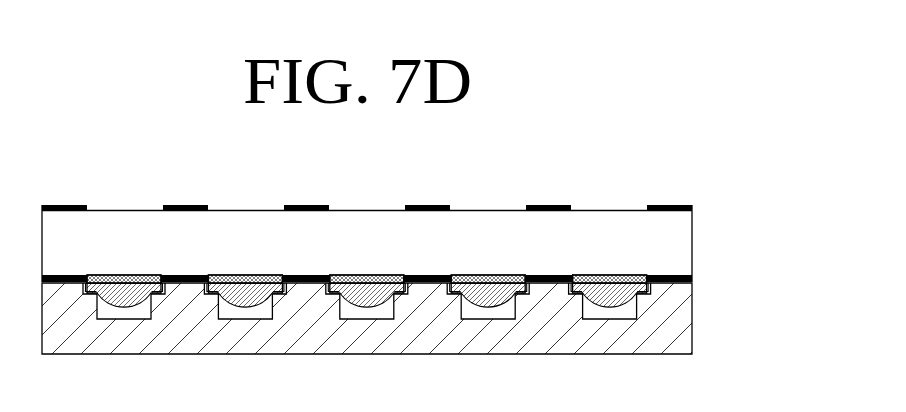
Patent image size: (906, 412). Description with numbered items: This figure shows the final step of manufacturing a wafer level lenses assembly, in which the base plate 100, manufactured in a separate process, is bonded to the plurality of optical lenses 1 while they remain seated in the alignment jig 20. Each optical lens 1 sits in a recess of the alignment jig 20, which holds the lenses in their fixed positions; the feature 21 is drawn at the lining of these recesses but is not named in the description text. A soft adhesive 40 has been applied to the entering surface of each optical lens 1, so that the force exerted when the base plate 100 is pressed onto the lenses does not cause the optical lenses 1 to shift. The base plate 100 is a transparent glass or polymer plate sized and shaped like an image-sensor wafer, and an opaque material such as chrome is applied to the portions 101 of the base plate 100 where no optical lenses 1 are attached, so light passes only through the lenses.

The optical lens 1 is at (610, 298).
The alignment jig 20 is at (710, 304).
The liner / reflective layer 21 is at (643, 302).
The adhesive 40 is at (608, 275).
The base plate 100 is at (710, 226).
The portions of the base plate 101 is at (543, 205).